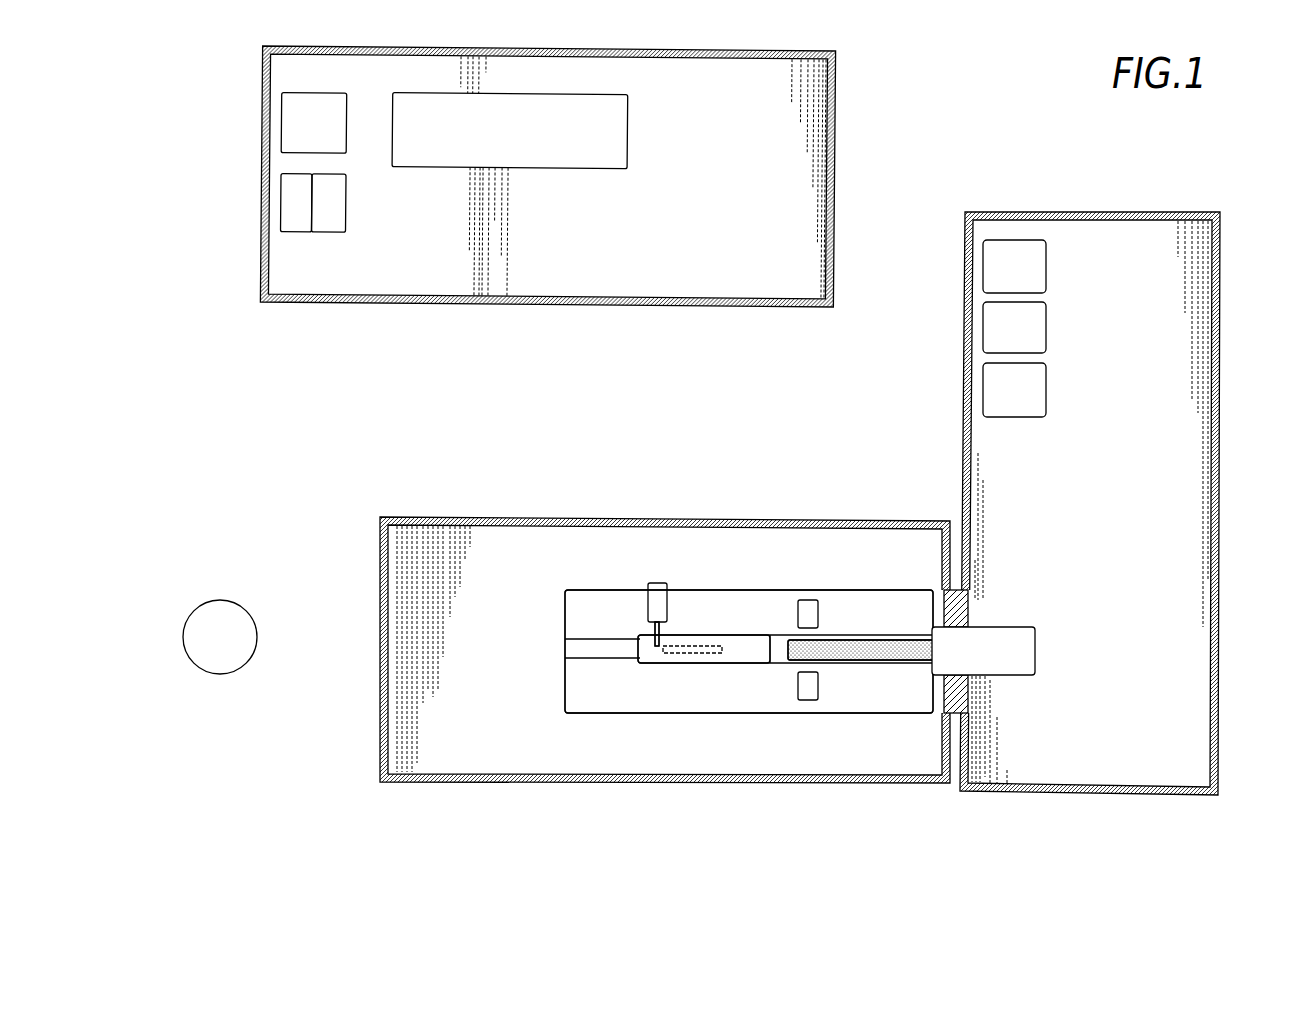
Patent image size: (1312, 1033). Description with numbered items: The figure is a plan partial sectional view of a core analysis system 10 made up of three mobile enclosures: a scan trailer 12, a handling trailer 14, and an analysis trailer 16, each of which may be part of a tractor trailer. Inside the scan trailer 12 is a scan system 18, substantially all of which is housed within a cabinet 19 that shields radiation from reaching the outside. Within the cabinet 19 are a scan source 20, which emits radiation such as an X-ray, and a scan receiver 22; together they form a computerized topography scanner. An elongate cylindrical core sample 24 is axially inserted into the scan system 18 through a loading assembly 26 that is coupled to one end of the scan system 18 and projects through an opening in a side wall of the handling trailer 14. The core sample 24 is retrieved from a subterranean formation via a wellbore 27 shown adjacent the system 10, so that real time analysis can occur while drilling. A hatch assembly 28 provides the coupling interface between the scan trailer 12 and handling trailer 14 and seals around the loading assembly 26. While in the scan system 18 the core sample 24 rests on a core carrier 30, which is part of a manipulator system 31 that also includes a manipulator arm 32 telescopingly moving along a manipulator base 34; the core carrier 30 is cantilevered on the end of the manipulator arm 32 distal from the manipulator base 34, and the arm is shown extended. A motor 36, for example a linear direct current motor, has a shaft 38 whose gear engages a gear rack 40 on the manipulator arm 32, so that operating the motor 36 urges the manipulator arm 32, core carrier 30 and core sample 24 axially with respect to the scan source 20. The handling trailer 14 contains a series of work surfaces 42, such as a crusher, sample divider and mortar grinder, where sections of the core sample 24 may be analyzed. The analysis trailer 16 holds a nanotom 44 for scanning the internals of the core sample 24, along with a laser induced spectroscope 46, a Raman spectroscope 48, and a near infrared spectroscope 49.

The core analysis system 10 is at (243, 387).
The scan trailer 12 is at (510, 783).
The handling trailer 14 is at (1220, 440).
The analysis trailer 16 is at (837, 118).
The scan system 18 is at (765, 558).
The cabinet 19 is at (562, 608).
The scan source 20 is at (817, 598).
The scan receiver 22 is at (817, 700).
The core sample 24 is at (900, 665).
The loading assembly 26 is at (1027, 615).
The wellbore 27 is at (225, 675).
The hatch assembly 28 is at (955, 585).
The core carrier 30 is at (875, 638).
The manipulator system 31 is at (640, 668).
The manipulator arm 32 is at (740, 655).
The manipulator base 34 is at (562, 647).
The motor 36 is at (655, 583).
The shaft 38 is at (662, 632).
The gear rack 40 is at (683, 657).
The work surfaces 42 is at (1068, 237).
The nanotom 44 is at (628, 135).
The laser induced spectroscope 46 is at (283, 113).
The Raman spectroscope 48 is at (348, 205).
The near infrared spectroscope 49 is at (284, 212).